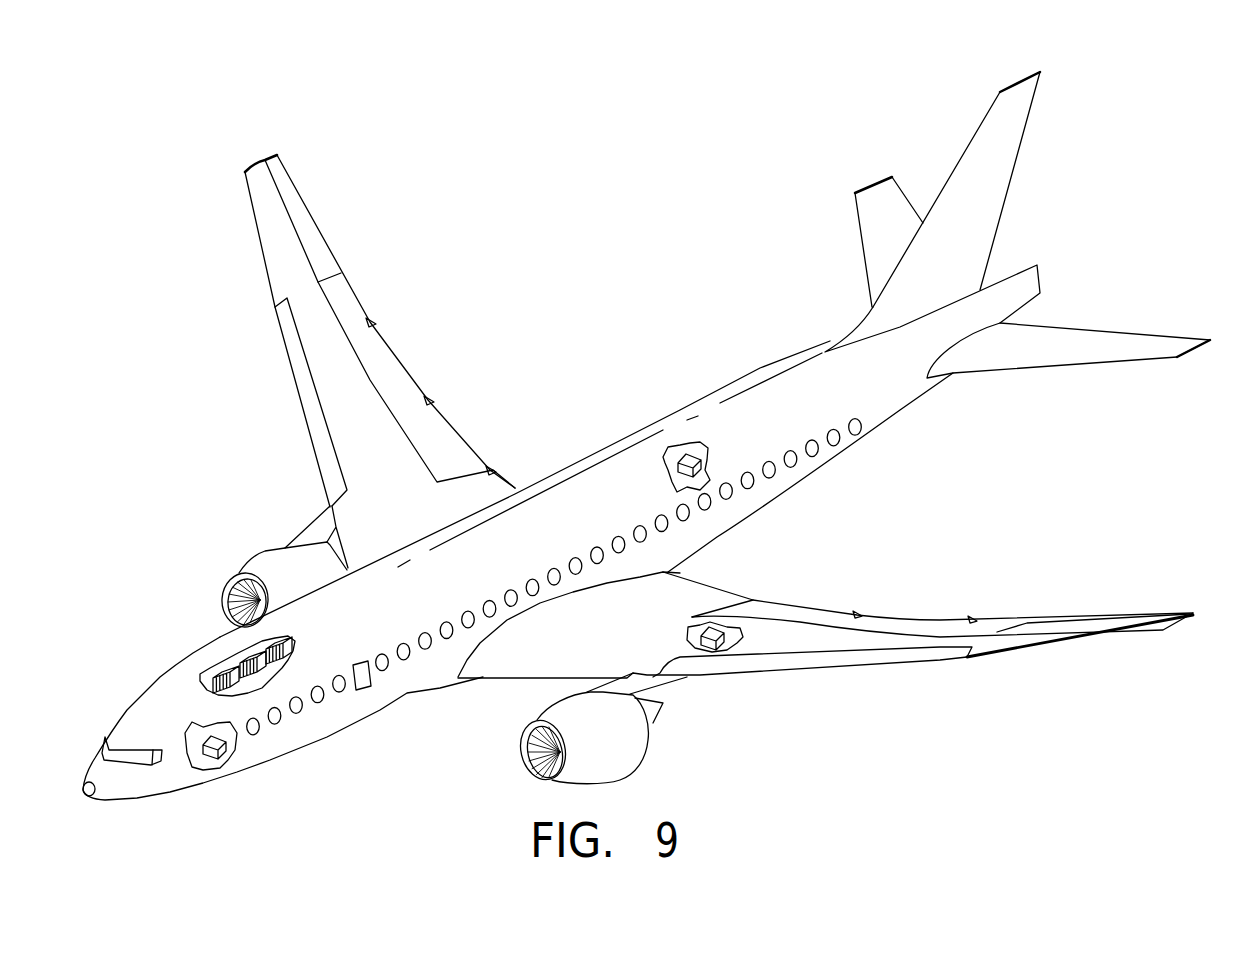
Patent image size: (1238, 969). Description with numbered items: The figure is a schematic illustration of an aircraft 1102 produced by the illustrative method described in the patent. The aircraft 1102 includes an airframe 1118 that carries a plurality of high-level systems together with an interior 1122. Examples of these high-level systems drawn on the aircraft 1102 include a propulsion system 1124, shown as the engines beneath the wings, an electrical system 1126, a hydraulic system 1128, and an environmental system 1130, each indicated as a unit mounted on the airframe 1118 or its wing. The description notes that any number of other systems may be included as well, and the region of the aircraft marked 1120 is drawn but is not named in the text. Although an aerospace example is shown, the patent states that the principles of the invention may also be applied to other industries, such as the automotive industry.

The aircraft 1102 is at (214, 343).
The airframe 1118 is at (203, 624).
The aft fuselage section 1120 is at (968, 515).
The interior 1122 is at (258, 682).
The propulsion system 1124 is at (260, 560).
The electrical system 1126 is at (203, 740).
The hydraulic system 1128 is at (717, 628).
The environmental system 1130 is at (682, 448).